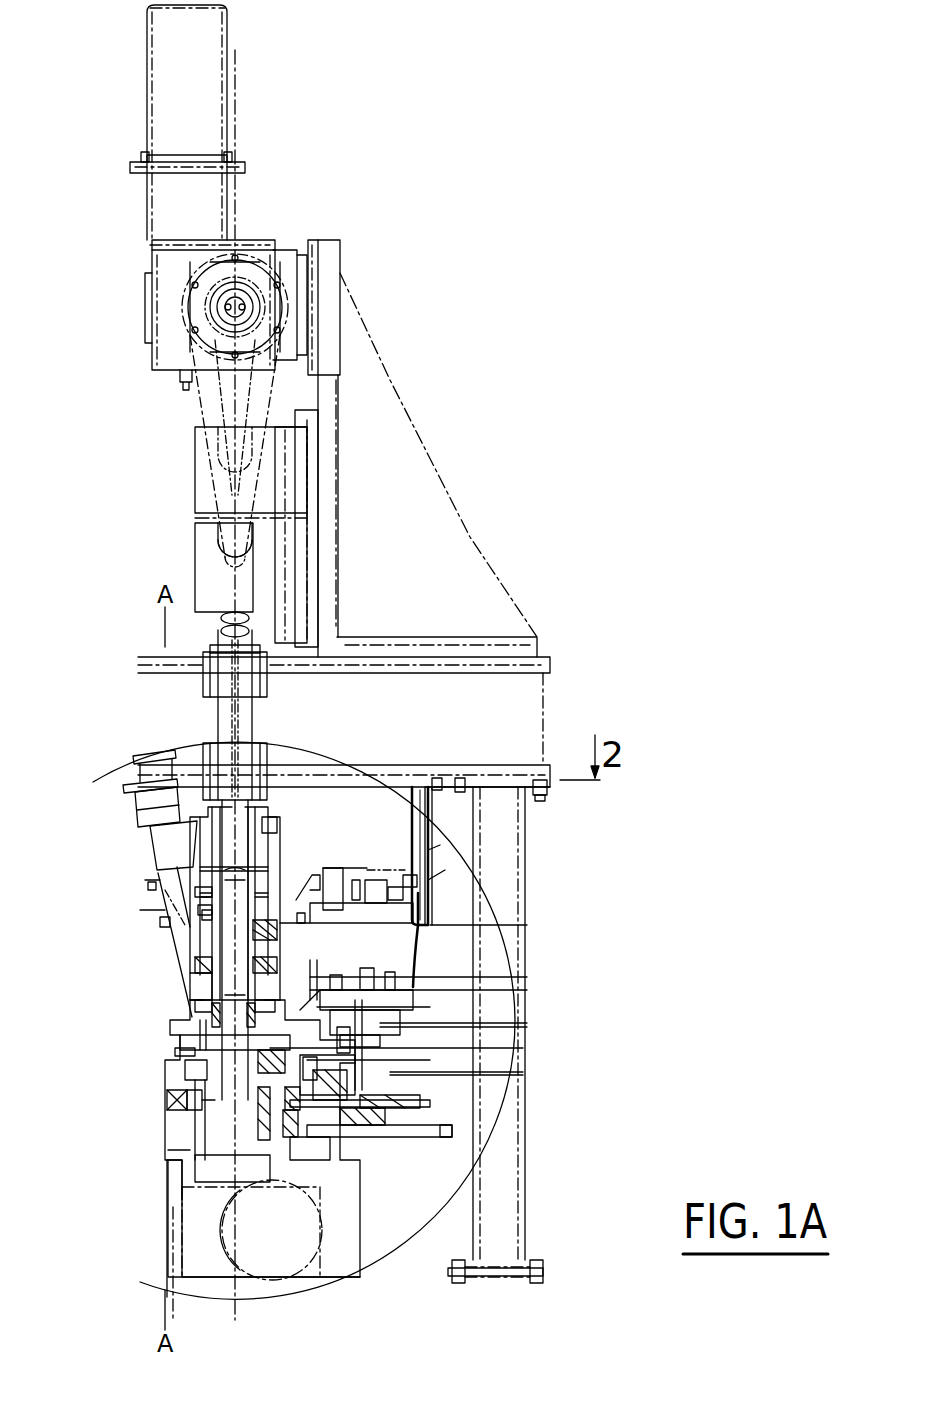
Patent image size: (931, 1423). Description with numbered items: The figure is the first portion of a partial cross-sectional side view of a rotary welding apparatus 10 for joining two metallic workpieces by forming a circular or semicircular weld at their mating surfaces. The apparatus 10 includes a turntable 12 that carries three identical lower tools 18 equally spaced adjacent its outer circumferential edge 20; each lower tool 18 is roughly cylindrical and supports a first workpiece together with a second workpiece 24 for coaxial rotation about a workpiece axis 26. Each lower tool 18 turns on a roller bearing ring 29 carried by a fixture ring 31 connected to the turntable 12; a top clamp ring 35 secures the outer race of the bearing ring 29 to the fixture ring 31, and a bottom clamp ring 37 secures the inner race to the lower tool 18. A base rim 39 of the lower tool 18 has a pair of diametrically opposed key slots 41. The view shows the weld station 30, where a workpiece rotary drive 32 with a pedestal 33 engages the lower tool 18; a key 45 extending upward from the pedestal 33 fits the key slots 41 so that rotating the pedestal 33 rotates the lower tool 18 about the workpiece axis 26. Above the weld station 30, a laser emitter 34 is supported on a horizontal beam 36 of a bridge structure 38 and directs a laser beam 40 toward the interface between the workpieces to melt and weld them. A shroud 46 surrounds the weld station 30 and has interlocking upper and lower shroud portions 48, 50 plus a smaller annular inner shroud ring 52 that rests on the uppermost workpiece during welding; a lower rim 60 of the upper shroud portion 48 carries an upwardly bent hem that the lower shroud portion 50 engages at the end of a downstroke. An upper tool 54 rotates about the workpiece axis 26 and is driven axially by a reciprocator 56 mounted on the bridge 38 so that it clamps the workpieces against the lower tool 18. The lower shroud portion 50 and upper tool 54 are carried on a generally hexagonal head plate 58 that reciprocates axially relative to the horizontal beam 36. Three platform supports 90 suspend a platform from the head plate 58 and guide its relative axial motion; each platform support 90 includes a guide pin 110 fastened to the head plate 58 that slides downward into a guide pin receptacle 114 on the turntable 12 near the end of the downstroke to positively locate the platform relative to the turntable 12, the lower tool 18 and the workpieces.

The rotary welding apparatus 10 is at (497, 370).
The turntable 12 is at (420, 1133).
The lower tool 18 is at (313, 1120).
The outer circumferential edge 20 is at (453, 1130).
The second workpiece 24 is at (170, 1066).
The workpiece axis 26 is at (238, 100).
The roller bearing ring 29 is at (307, 1123).
The weld station 30 is at (137, 1050).
The fixture ring 31 is at (340, 1120).
The workpiece rotary drive 32 is at (207, 1240).
The pedestal 33 is at (257, 1167).
The laser emitter 34 is at (158, 830).
The top clamp ring 35 is at (310, 1093).
The horizontal beam 36 is at (543, 728).
The bottom clamp ring 37 is at (175, 1115).
The bridge structure 38 is at (552, 783).
The base rim 39 is at (237, 1157).
The laser beam 40 is at (180, 950).
The key slot 41 is at (233, 1137).
The key 45 is at (230, 1143).
The shroud 46 is at (447, 840).
The upper shroud portion 48 is at (430, 877).
The lower shroud portion 50 is at (413, 840).
The inner shroud ring 52 is at (295, 900).
The upper tool 54 is at (193, 873).
The reciprocator 56 is at (283, 262).
The head plate 58 is at (390, 855).
The lower rim 60 is at (437, 927).
The platform support 90 is at (387, 1020).
The guide pin 110 is at (380, 1095).
The guide pin receptacle 114 is at (380, 1120).